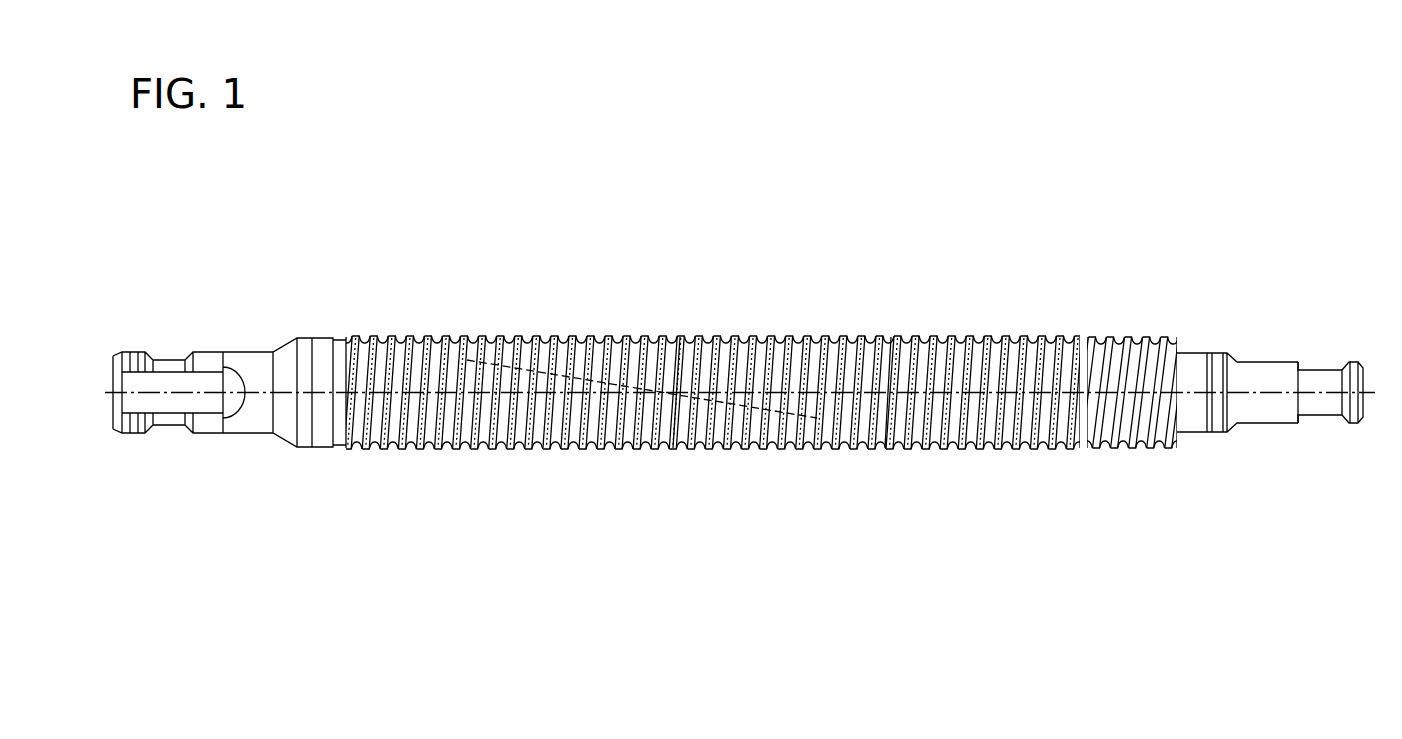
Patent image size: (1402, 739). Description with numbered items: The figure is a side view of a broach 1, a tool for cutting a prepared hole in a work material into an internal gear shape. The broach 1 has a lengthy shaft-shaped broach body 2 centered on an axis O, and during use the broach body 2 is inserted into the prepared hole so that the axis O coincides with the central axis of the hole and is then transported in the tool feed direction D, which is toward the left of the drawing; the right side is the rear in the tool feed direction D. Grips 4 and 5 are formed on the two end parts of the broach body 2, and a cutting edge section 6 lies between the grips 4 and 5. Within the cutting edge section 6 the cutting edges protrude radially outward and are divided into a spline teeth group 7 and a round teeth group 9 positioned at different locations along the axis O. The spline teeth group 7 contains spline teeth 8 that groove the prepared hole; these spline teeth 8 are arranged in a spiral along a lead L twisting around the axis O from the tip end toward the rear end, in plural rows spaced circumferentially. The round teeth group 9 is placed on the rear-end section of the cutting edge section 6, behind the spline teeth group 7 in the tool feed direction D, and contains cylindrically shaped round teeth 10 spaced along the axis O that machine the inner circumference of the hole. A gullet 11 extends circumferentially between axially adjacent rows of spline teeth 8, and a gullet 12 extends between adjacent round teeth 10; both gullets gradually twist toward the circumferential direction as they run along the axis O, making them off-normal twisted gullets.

The broach 1 is at (1279, 165).
The broach body 2 is at (1202, 338).
The grip 4 is at (198, 436).
The grip 5 is at (1323, 420).
The cutting edge section 6 is at (1085, 148).
The spline teeth group 7 is at (346, 335).
The spline teeth 8 is at (378, 337).
The round teeth group 9 is at (1173, 335).
The round teeth 10 is at (1145, 448).
The gullet 11 is at (349, 447).
The gullet 12 is at (1153, 336).
The lead L is at (738, 455).
The axis O is at (1323, 390).
The tool feed direction D is at (827, 634).